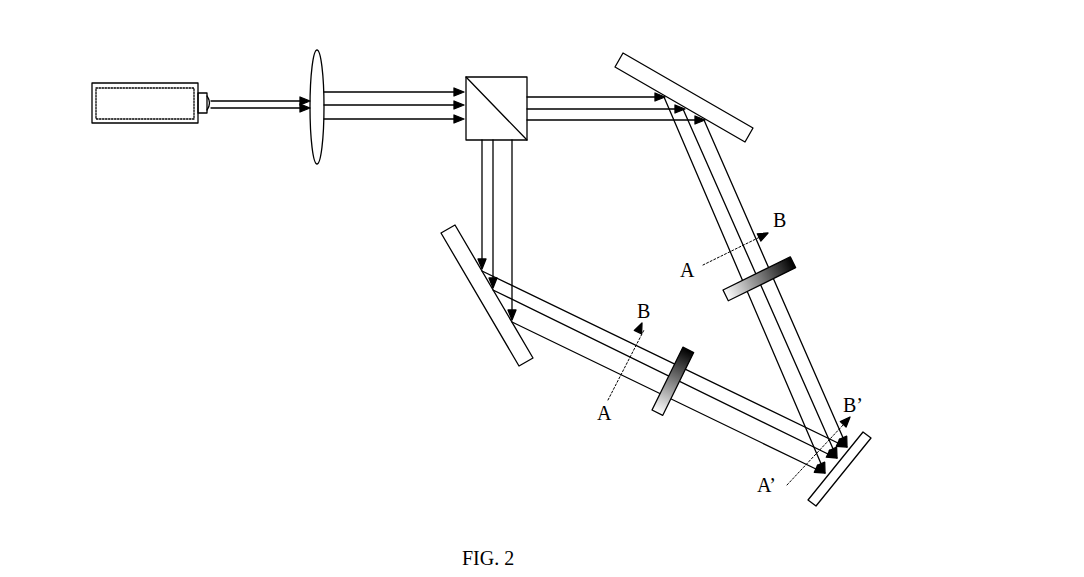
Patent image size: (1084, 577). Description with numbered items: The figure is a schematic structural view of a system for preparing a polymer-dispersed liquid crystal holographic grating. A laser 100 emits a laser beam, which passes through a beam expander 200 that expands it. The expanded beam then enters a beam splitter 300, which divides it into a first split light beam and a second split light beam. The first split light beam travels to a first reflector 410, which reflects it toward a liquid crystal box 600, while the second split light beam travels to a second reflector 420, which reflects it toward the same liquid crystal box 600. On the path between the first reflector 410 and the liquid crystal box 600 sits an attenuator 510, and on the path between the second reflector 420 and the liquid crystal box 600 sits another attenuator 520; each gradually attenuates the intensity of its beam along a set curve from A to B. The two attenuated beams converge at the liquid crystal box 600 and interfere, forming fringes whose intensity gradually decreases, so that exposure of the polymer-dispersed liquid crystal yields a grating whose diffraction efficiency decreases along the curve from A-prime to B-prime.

The laser 100 is at (133, 150).
The beam expander 200 is at (274, 145).
The beam splitter 300 is at (452, 157).
The first reflector 410 is at (460, 314).
The second reflector 420 is at (674, 135).
The attenuator 510 is at (628, 429).
The attenuator 520 is at (801, 212).
The liquid crystal box 600 is at (876, 413).